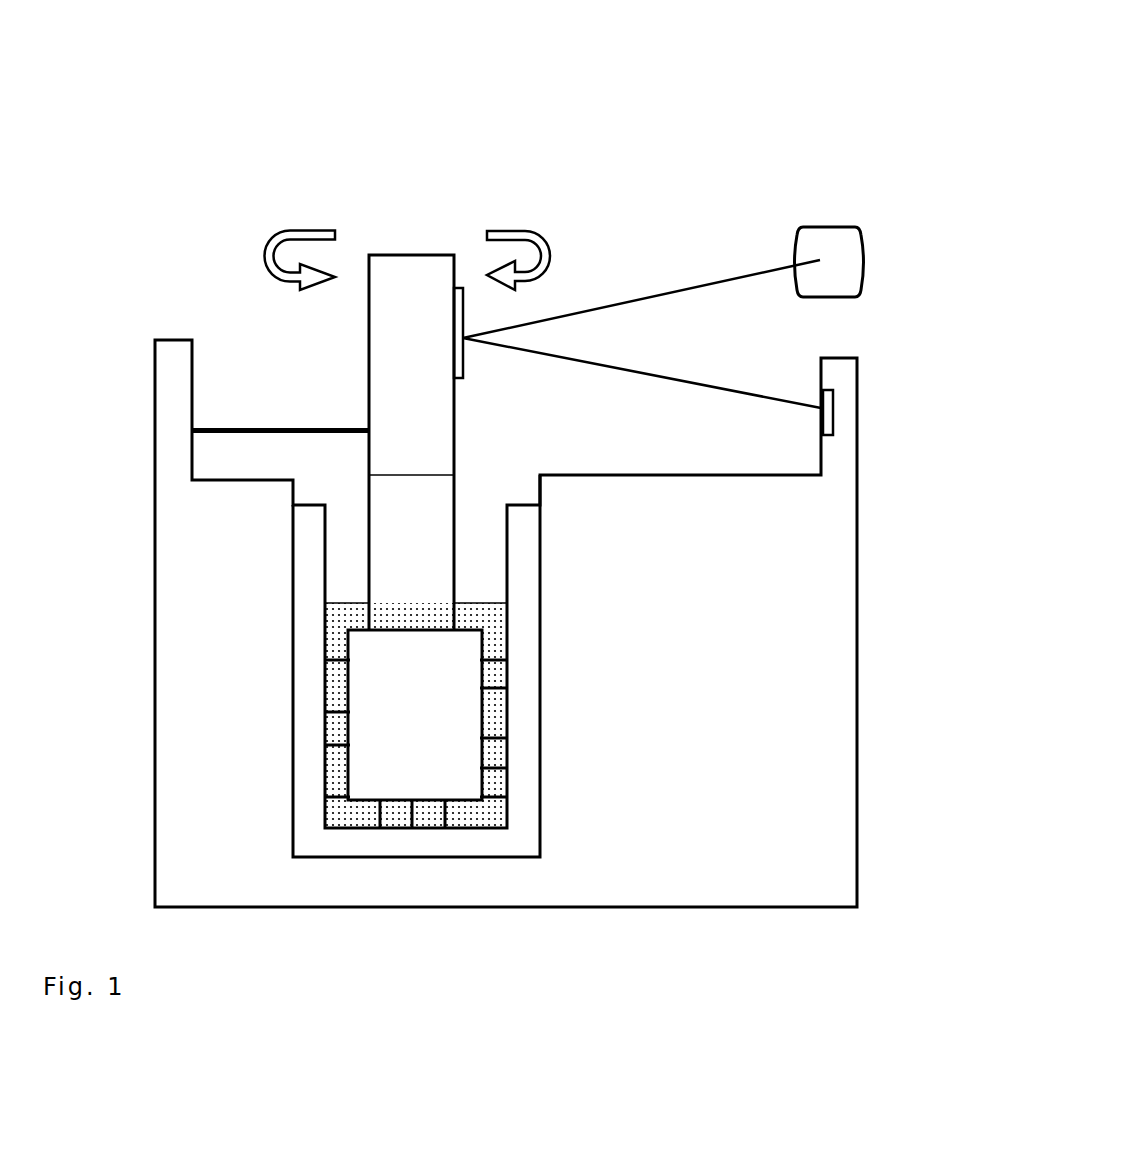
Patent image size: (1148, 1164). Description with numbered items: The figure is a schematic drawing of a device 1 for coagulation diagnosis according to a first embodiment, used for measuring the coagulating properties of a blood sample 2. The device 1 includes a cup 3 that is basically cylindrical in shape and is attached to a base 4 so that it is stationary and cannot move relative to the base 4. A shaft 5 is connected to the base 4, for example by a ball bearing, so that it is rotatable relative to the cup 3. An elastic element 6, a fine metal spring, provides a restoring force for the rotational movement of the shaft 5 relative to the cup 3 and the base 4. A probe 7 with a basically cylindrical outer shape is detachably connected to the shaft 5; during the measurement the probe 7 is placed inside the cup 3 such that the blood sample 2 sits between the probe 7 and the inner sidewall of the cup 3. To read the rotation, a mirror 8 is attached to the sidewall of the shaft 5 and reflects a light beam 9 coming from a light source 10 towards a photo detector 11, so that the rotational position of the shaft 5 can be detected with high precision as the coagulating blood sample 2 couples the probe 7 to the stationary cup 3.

The device 1 is at (678, 167).
The blood sample 2 is at (502, 748).
The cup 3 is at (527, 608).
The base 4 is at (815, 678).
The shaft 5 is at (400, 264).
The elastic element 6 is at (258, 429).
The probe 7 is at (435, 547).
The mirror 8 is at (465, 358).
The light beam 9 is at (653, 293).
The light source 10 is at (840, 222).
The photo detector 11 is at (847, 415).